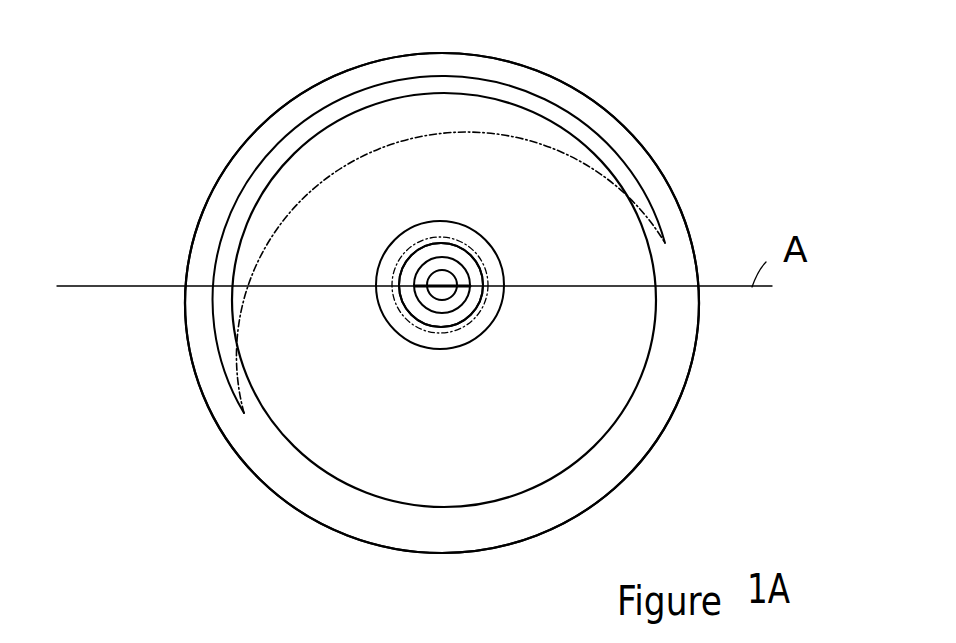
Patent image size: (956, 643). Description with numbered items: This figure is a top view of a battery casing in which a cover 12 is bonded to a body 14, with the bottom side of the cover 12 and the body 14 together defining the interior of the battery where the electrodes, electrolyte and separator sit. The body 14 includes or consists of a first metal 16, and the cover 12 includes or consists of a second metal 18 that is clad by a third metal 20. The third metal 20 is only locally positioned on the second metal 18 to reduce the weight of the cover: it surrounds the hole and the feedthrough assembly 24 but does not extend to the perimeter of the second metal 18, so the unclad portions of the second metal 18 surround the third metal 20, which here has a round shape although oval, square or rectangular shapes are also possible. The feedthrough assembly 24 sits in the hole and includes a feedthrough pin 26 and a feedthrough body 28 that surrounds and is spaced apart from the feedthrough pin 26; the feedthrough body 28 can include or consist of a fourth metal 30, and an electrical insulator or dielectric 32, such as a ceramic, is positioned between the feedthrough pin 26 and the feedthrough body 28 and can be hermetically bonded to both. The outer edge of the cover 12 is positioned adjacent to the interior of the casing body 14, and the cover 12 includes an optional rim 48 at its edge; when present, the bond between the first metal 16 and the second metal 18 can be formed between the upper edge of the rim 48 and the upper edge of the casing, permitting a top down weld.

The cover 12 is at (273, 474).
The body 14 is at (345, 537).
The first metal 16 is at (222, 405).
The second metal 18 is at (353, 140).
The third metal 20 is at (423, 230).
The feedthrough assembly 24 is at (452, 335).
The feedthrough pin 26 is at (458, 270).
The feedthrough body 28 is at (499, 262).
The fourth metal 30 is at (419, 306).
The dielectric 32 is at (421, 270).
The rim 48 is at (248, 399).